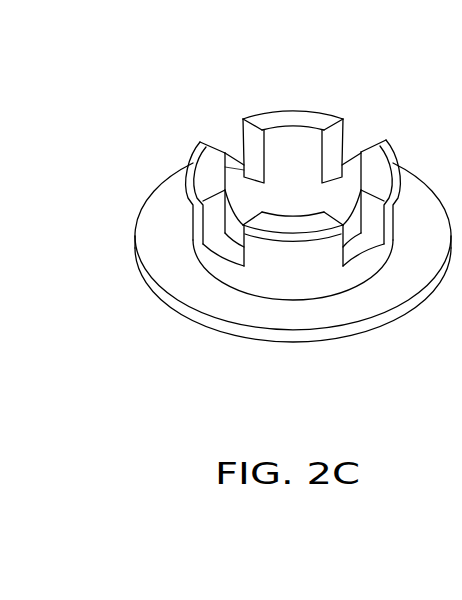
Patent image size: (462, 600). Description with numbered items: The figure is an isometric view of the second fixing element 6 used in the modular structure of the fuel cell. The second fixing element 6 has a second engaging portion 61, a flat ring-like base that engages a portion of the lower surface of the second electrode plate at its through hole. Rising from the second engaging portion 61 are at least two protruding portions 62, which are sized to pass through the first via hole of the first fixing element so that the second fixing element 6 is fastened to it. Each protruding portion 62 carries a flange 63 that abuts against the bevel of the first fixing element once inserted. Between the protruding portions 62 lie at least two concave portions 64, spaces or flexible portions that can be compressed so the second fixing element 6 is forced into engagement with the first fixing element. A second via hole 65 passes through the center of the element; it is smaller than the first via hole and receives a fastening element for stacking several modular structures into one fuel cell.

The second fixing element 6 is at (170, 84).
The second engaging portion 61 is at (373, 302).
The protruding portion 62 is at (287, 145).
The flange 63 is at (345, 118).
The concave portion 64 is at (358, 135).
The second via hole 65 is at (246, 192).